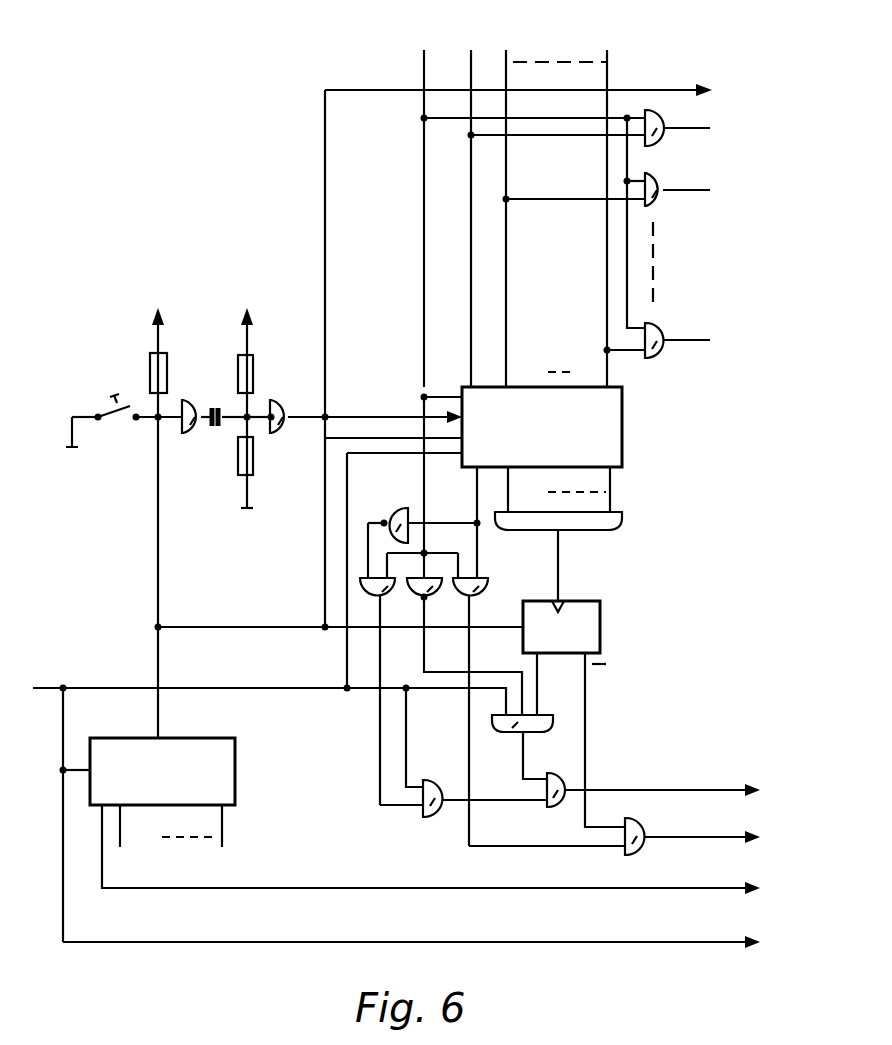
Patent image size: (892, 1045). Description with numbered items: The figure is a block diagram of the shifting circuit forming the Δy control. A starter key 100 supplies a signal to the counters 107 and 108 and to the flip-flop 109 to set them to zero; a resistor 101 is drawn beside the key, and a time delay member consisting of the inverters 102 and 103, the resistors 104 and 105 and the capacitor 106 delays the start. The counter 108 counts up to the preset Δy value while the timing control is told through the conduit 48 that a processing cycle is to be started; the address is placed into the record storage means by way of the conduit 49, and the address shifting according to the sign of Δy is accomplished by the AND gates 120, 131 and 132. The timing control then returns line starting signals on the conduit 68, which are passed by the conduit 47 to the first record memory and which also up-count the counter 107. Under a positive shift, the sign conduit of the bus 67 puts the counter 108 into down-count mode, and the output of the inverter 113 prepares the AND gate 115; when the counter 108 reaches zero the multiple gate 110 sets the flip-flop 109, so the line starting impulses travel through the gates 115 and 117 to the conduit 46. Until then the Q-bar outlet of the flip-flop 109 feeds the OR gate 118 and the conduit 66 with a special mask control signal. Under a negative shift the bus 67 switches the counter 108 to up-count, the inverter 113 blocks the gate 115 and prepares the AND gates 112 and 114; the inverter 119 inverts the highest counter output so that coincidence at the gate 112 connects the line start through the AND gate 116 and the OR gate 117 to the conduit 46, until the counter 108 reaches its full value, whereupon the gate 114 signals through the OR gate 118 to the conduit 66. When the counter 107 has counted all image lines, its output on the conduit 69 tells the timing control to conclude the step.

The conductor bus 67 is at (613, 35).
The conduit 48 is at (694, 73).
The AND gate 132 is at (660, 143).
The AND gate 131 is at (660, 203).
The AND gate 120 is at (660, 356).
The conduit 49 is at (718, 75).
The starter key 100 is at (119, 412).
The resistor 101 is at (150, 370).
The inverter 102 is at (200, 400).
The inverter 103 is at (286, 401).
The resistor 104 is at (240, 372).
The resistor 105 is at (253, 462).
The capacitor 106 is at (213, 428).
The counter 108 is at (605, 430).
The multiple gate 110 is at (525, 527).
The flip-flop 109 is at (600, 620).
The inverter 119 is at (395, 508).
The AND gate 112 is at (390, 595).
The inverter 113 is at (437, 595).
The AND gate 114 is at (483, 595).
The AND gate 115 is at (508, 735).
The AND gate 116 is at (433, 817).
The OR gate 117 is at (551, 805).
The OR gate 118 is at (643, 845).
The counter 107 is at (235, 765).
The conduit 68 is at (35, 685).
The conduit 46 is at (678, 788).
The control conduit 66 is at (682, 836).
The conduit 69 is at (701, 889).
The conduit 47 is at (680, 942).